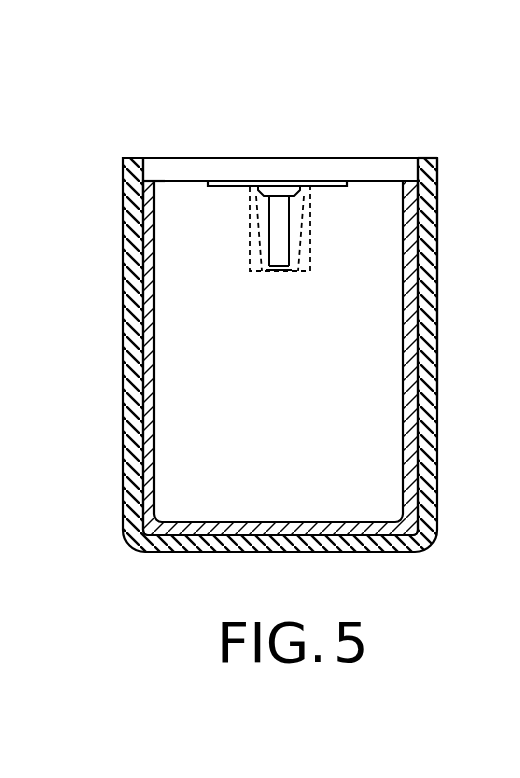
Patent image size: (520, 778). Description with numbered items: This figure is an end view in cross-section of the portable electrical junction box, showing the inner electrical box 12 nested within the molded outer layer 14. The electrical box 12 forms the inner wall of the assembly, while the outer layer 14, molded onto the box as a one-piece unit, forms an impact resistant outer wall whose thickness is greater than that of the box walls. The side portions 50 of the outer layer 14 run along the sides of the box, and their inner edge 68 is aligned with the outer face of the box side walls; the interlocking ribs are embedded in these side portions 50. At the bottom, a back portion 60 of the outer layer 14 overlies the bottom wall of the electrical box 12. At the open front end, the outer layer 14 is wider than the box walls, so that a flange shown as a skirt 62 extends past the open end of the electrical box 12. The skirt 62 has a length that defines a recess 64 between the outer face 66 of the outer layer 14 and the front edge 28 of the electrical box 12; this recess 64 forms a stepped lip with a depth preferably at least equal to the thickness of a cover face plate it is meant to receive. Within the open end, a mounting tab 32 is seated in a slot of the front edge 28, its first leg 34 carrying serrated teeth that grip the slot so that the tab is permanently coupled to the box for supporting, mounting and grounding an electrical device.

The electrical box 12 is at (265, 512).
The outer layer 14 is at (441, 435).
The front edge 28 is at (405, 180).
The mounting tab 32 is at (302, 200).
The first leg 34 is at (250, 235).
The side portions 50 is at (123, 334).
The back portion 60 is at (197, 553).
The skirt 62 is at (440, 178).
The recess 64 is at (153, 174).
The outer face 66 is at (423, 160).
The inner edge 68 is at (143, 178).